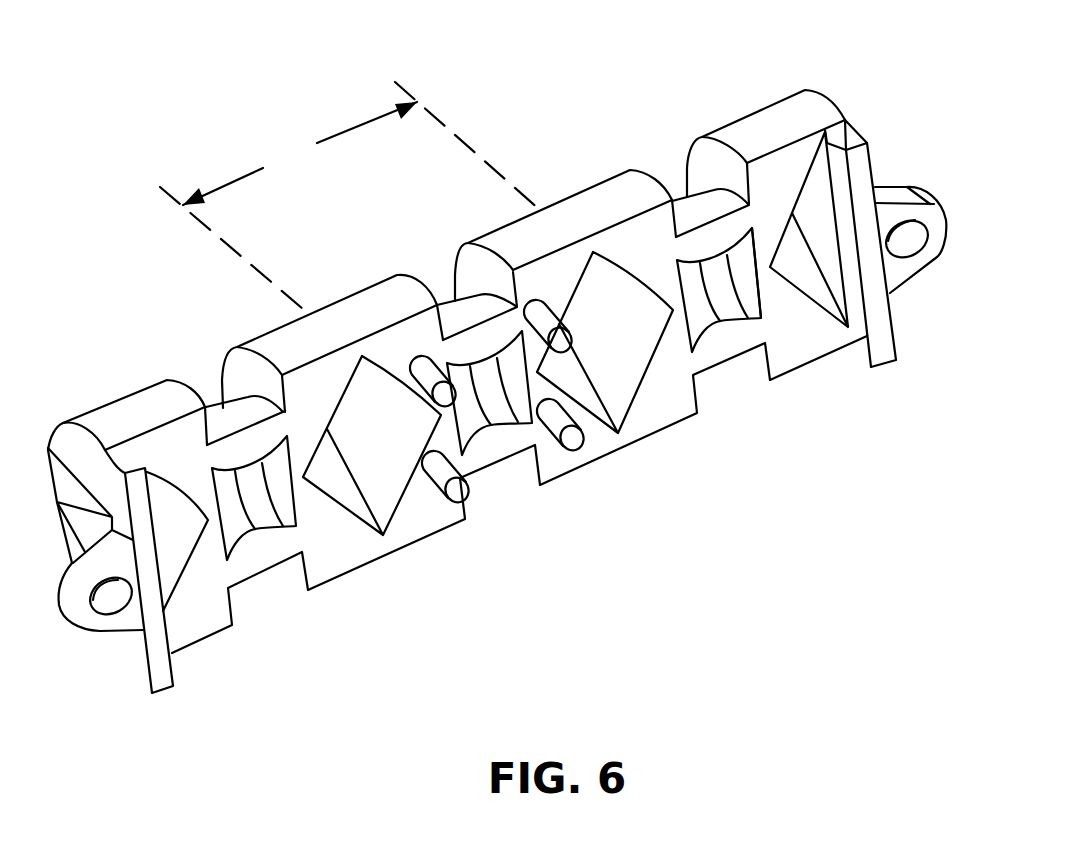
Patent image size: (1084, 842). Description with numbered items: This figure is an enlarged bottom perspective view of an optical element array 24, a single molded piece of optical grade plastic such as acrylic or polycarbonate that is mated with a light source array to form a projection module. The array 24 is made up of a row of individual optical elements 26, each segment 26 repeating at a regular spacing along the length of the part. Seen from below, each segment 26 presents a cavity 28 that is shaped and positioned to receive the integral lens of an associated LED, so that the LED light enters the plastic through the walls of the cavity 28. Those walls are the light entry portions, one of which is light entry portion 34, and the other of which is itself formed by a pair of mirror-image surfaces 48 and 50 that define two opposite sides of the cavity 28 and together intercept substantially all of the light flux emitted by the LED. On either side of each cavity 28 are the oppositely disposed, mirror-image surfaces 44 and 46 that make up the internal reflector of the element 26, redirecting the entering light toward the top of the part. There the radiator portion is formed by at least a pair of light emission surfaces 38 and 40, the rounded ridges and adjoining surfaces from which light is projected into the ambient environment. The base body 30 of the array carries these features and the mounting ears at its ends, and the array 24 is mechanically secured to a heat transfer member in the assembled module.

The optical element array 24 is at (874, 424).
The optical element 26 is at (350, 198).
The cavity 28 is at (490, 393).
The base plate 30 is at (335, 560).
The light entry portion 34 is at (268, 525).
The light emission surface 38 is at (133, 405).
The light emission surface 40 is at (238, 412).
The reflector surface 44 is at (620, 373).
The reflector surface 46 is at (558, 382).
The light entry surface portion 48 is at (685, 318).
The light entry surface portion 50 is at (753, 283).